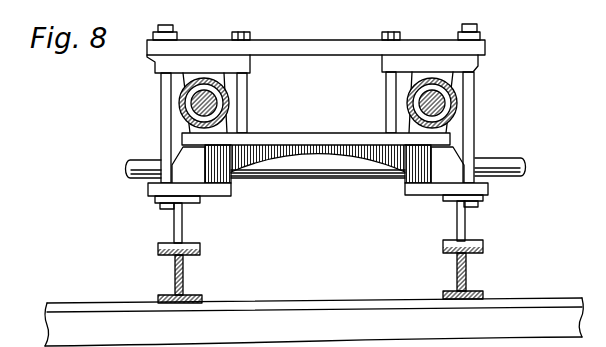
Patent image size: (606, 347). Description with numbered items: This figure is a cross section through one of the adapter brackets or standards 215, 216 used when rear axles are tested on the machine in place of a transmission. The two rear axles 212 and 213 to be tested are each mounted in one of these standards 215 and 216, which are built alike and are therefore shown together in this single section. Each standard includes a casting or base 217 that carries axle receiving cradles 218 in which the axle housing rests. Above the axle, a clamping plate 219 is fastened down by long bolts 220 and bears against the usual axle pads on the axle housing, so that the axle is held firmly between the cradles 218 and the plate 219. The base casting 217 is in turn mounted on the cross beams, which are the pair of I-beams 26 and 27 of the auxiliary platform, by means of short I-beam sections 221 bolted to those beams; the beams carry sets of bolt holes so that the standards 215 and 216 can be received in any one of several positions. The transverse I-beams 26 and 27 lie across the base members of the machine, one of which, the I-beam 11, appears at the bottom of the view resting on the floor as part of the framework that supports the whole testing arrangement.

The I-beam 11 is at (578, 285).
The I-beam 26 is at (175, 276).
The I-beam 27 is at (467, 270).
The rear axle 212 is at (178, 96).
The rear axle 213 is at (457, 98).
The adapter bracket or standard 215 is at (133, 179).
The adapter bracket or standard 216 is at (331, 39).
The casting or base 217 is at (314, 134).
The axle receiving cradle 218 is at (190, 130).
The clamping plate 219 is at (267, 46).
The long bolt 220 is at (162, 112).
The short I-beam section 221 is at (174, 222).